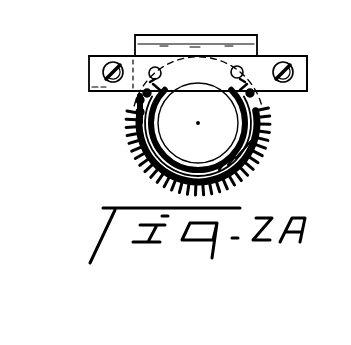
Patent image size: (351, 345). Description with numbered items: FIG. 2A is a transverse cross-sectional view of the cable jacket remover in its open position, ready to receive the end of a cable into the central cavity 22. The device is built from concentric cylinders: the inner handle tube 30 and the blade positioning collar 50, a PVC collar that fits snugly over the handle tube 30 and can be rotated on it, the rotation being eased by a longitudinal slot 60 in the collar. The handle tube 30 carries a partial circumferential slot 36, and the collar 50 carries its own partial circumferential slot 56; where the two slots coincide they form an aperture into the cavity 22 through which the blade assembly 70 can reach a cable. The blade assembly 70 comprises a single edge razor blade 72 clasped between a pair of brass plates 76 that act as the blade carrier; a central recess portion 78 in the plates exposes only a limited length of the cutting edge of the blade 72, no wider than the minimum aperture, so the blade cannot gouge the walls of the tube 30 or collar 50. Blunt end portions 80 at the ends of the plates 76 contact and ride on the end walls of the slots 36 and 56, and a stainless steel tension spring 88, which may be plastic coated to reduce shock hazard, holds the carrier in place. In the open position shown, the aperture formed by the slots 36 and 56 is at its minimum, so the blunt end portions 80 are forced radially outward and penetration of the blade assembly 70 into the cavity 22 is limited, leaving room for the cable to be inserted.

The central cavity 22 is at (134, 109).
The handle tube 30 is at (237, 182).
The partial circumferential slot 36 is at (274, 131).
The blade positioning collar 50 is at (273, 107).
The partial circumferential slot 56 is at (141, 168).
The longitudinal slot 60 is at (253, 167).
The blade assembly 70 is at (300, 58).
The blade 72 is at (210, 92).
The brass plates 76 is at (307, 78).
The central recess portion 78 is at (195, 88).
The blunt end portions 80 is at (143, 80).
The tension spring 88 is at (128, 143).